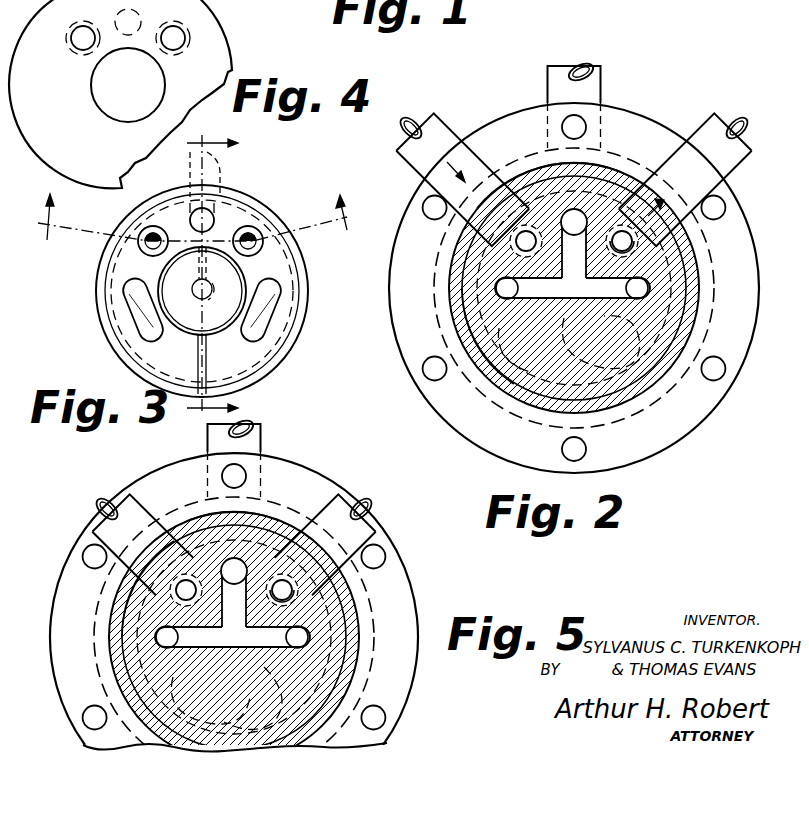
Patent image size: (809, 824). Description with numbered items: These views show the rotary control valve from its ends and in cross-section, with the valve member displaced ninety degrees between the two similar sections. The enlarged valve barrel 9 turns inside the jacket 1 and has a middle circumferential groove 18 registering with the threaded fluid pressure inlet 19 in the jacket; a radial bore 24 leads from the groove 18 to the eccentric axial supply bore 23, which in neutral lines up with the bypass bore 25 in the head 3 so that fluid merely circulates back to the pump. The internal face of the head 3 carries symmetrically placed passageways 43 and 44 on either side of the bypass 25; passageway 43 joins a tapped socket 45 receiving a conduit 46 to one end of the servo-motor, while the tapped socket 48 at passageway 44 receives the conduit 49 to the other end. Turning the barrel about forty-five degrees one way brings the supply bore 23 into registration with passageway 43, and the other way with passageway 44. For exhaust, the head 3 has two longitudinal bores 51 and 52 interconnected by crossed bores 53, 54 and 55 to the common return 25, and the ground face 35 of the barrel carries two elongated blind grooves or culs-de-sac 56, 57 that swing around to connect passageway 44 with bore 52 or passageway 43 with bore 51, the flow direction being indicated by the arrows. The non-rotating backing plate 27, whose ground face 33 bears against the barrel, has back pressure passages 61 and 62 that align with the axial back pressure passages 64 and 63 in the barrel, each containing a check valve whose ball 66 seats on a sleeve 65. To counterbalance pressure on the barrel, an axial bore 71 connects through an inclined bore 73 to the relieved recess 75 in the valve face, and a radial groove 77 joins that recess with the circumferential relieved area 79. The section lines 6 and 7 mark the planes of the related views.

In FIG. 2, the jacket 1 is at (507, 148).
In FIG. 2, the head 3 is at (589, 288).
In FIG. 5, the head 3 is at (246, 599).
In FIG. 3, the section line 6- 6 is at (218, 276).
In FIG. 3, the section line 7- 7 is at (192, 217).
In FIG. 3, the valve barrel 9 is at (97, 290).
In FIG. 3, the middle circumferential groove 18 is at (206, 172).
In FIG. 2, the middle circumferential groove 18 is at (599, 134).
In FIG. 5, the middle circumferential groove 18 is at (254, 496).
In FIG. 2, the fluid pressure inlet 19 is at (597, 104).
In FIG. 5, the fluid pressure inlet 19 is at (244, 463).
In FIG. 3, the supply bore 23 is at (218, 218).
In FIG. 2, the supply bore 23 is at (601, 288).
In FIG. 5, the supply bore 23 is at (204, 637).
In FIG. 3, the radial bore 24 is at (188, 208).
In FIG. 2, the bypass bore 25 is at (556, 149).
In FIG. 5, the bypass bore 25 is at (224, 494).
In FIG. 4, the backing plate 27 is at (230, 62).
In FIG. 4, the ground face 33 is at (75, 128).
In FIG. 3, the ground face 35 is at (268, 267).
In FIG. 2, the passageway 43 is at (674, 250).
In FIG. 5, the passageway 43 is at (332, 592).
In FIG. 2, the passageway 44 is at (533, 288).
In FIG. 5, the passageway 44 is at (195, 637).
In FIG. 2, the tapped socket 45 is at (672, 238).
In FIG. 5, the tapped socket 45 is at (301, 543).
In FIG. 2, the conduit 46 is at (693, 179).
In FIG. 5, the conduit 46 is at (330, 531).
In FIG. 2, the tapped socket 48 is at (473, 241).
In FIG. 2, the conduit 49 is at (445, 179).
In FIG. 5, the conduit 49 is at (129, 536).
In FIG. 2, the longitudinal bore 51 is at (617, 299).
In FIG. 5, the longitudinal bore 51 is at (281, 654).
In FIG. 2, the longitudinal bore 52 is at (547, 288).
In FIG. 5, the longitudinal bore 52 is at (210, 637).
In FIG. 2, the crossed bore 53 is at (615, 288).
In FIG. 5, the crossed bore 53 is at (232, 637).
In FIG. 2, the crossed bore 54 is at (574, 244).
In FIG. 5, the crossed bore 54 is at (234, 593).
In FIG. 2, the crossed bore 55 is at (527, 288).
In FIG. 3, the cul-de-sac 56 is at (130, 317).
In FIG. 2, the cul-de-sac 56 is at (464, 323).
In FIG. 5, the cul-de-sac 56 is at (160, 700).
In FIG. 3, the cul-de-sac 57 is at (273, 318).
In FIG. 2, the cul-de-sac 57 is at (615, 371).
In FIG. 5, the cul-de-sac 57 is at (317, 677).
In FIG. 4, the back pressure passage 61 is at (188, 36).
In FIG. 2, the back pressure passage 61 is at (613, 288).
In FIG. 5, the back pressure passage 61 is at (252, 637).
In FIG. 4, the back pressure passage 62 is at (70, 30).
In FIG. 5, the back pressure passage 62 is at (133, 590).
In FIG. 3, the back pressure passage 63 is at (138, 247).
In FIG. 2, the back pressure passage 63 is at (570, 198).
In FIG. 5, the back pressure passage 63 is at (174, 616).
In FIG. 4, the back pressure passage 64 is at (190, 27).
In FIG. 3, the back pressure passage 64 is at (257, 240).
In FIG. 2, the back pressure passage 64 is at (602, 332).
In FIG. 5, the back pressure passage 64 is at (153, 562).
In FIG. 3, the sleeve 65 is at (140, 237).
In FIG. 3, the ball 66 is at (147, 237).
In FIG. 3, the axial bore 71 is at (201, 300).
In FIG. 3, the inclined bore 73 is at (198, 272).
In FIG. 3, the relieved recess 75 is at (160, 270).
In FIG. 3, the radial groove 77 is at (210, 358).
In FIG. 3, the circumferential relieved area 79 is at (272, 363).